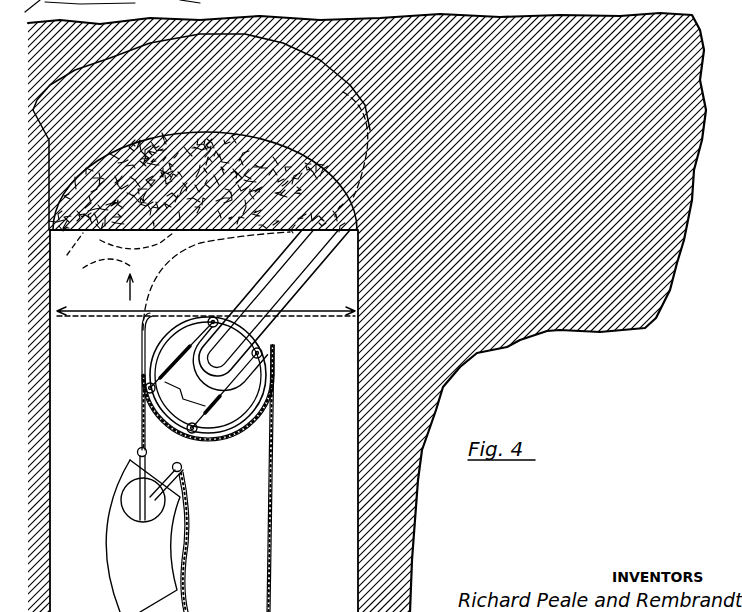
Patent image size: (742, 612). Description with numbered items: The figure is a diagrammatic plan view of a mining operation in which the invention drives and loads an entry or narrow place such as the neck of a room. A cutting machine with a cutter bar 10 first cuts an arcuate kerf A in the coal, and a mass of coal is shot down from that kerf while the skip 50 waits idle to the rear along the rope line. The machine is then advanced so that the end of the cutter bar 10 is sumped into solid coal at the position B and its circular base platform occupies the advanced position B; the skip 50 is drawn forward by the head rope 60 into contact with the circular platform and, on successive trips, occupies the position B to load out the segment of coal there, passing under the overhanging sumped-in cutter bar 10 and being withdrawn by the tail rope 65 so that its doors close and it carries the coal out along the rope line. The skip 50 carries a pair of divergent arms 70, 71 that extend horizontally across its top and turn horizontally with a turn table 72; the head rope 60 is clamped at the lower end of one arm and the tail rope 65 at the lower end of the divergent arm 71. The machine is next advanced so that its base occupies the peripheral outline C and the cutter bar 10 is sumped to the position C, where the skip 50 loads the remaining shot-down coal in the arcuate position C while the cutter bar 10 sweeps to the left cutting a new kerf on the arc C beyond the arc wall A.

The cutter bar 10 is at (320, 250).
The skip 50 is at (110, 556).
The head rope 60 is at (141, 425).
The tail rope 65 is at (189, 600).
The divergent arm 70 is at (148, 460).
The divergent arm 71 is at (181, 468).
The turn table 72 is at (128, 500).
The arcuate kerf A is at (269, 144).
The advanced position B is at (140, 320).
The further advanced position C is at (367, 97).